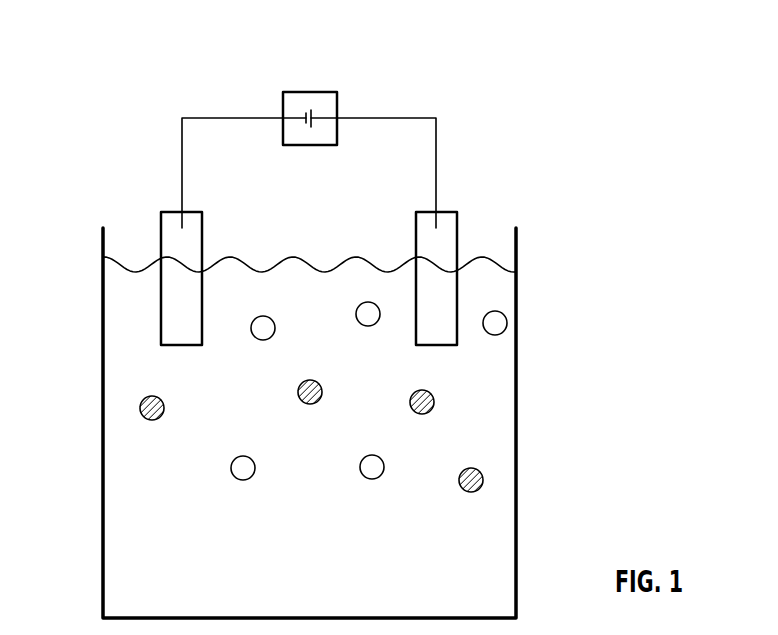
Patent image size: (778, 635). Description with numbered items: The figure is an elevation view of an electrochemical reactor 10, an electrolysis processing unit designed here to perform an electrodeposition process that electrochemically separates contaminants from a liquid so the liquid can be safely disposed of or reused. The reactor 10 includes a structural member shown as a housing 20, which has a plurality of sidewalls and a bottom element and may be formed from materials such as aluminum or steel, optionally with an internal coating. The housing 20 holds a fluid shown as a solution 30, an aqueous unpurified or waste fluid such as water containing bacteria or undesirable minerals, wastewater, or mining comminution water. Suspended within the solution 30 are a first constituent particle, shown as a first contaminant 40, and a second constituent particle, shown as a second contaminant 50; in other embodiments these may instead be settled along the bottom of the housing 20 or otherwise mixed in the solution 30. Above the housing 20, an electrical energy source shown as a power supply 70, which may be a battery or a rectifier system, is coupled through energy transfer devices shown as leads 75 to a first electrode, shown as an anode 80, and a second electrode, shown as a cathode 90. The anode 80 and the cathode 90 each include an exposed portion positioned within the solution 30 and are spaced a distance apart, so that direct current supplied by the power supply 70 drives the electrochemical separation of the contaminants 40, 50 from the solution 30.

The electrochemical reactor 10 is at (118, 80).
The housing 20 is at (516, 368).
The solution 30 is at (492, 525).
The first contaminant 40 is at (470, 480).
The second contaminant 50 is at (493, 325).
The power supply 70 is at (309, 91).
The leads 75 is at (231, 117).
The anode 80 is at (448, 222).
The cathode 90 is at (170, 222).